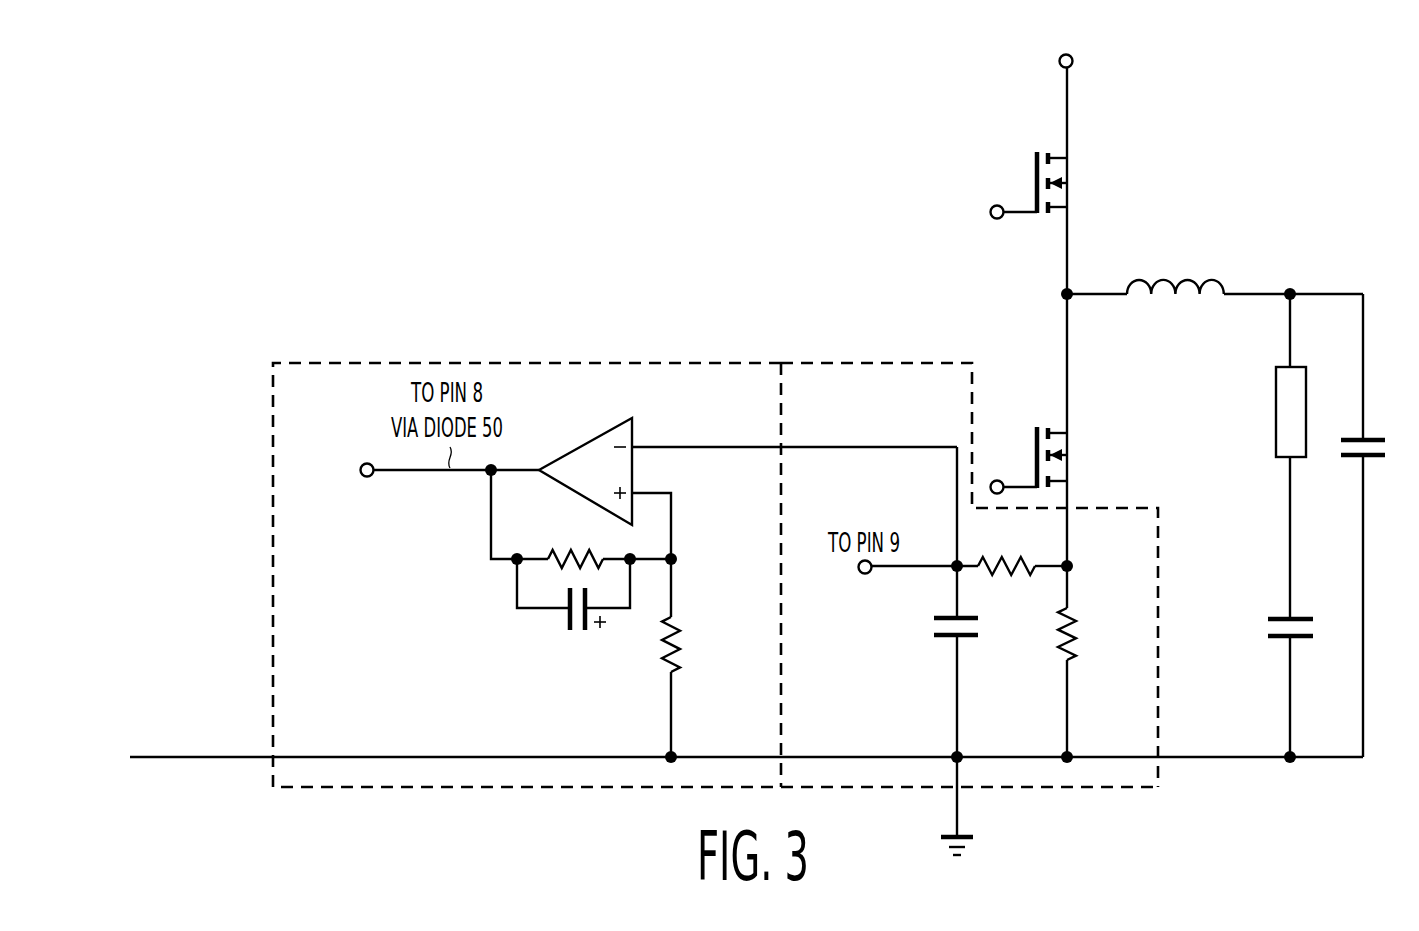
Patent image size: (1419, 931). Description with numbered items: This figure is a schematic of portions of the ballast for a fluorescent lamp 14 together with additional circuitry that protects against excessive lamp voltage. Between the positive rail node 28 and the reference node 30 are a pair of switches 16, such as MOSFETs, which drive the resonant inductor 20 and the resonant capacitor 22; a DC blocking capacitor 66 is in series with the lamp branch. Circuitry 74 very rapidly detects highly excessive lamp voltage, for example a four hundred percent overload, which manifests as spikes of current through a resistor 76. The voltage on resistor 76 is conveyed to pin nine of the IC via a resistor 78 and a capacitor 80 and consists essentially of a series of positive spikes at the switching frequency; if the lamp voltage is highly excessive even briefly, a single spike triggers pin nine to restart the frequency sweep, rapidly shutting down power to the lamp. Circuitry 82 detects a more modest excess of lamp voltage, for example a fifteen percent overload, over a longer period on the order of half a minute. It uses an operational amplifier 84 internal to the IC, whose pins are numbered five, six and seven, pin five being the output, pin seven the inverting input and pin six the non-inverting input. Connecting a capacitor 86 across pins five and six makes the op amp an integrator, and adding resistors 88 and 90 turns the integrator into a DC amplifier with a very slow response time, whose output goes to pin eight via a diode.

The fluorescent lamp 14 is at (1274, 414).
The switch 16 is at (1085, 186).
The resonant inductor 20 is at (1213, 279).
The resonant capacitor 22 is at (1370, 436).
The positive rail node 28 is at (1073, 57).
The reference node 30 is at (958, 820).
The DC blocking capacitor 66 is at (1300, 617).
The circuitry 74 is at (900, 360).
The resistor 76 is at (1080, 628).
The resistor 78 is at (1020, 578).
The capacitor 80 is at (945, 642).
The circuitry 82 is at (573, 360).
The operational amplifier 84 is at (592, 440).
The capacitor 86 is at (568, 615).
The resistor 88 is at (556, 550).
The resistor 90 is at (678, 655).